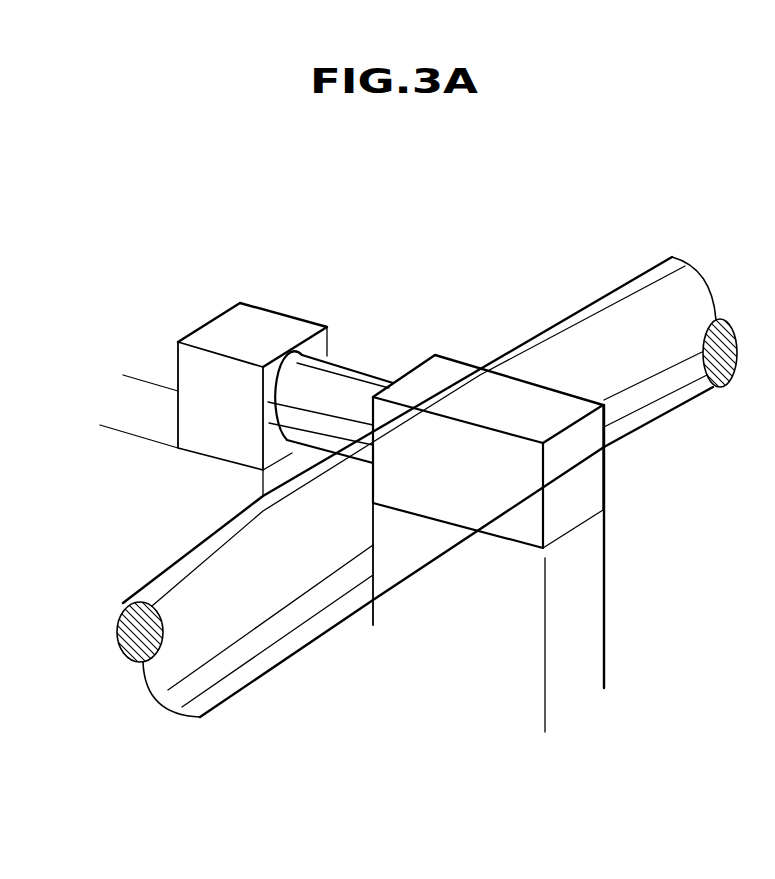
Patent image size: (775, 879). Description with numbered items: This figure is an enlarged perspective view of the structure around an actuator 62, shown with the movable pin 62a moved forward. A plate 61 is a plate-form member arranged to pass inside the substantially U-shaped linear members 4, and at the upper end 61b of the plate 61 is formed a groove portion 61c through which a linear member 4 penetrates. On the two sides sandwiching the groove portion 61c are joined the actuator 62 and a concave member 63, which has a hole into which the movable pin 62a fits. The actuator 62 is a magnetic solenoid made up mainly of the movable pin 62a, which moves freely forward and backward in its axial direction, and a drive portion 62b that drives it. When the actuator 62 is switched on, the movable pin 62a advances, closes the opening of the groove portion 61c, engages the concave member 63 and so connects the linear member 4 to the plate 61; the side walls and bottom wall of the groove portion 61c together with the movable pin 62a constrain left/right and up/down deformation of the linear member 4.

The linear member 4 is at (200, 592).
The plate 61 is at (425, 536).
The upper end 61b is at (138, 402).
The groove portion 61c is at (306, 612).
The actuator 62 is at (435, 394).
The movable pin 62a is at (350, 392).
The drive portion 62b is at (465, 382).
The concave member 63 is at (227, 327).